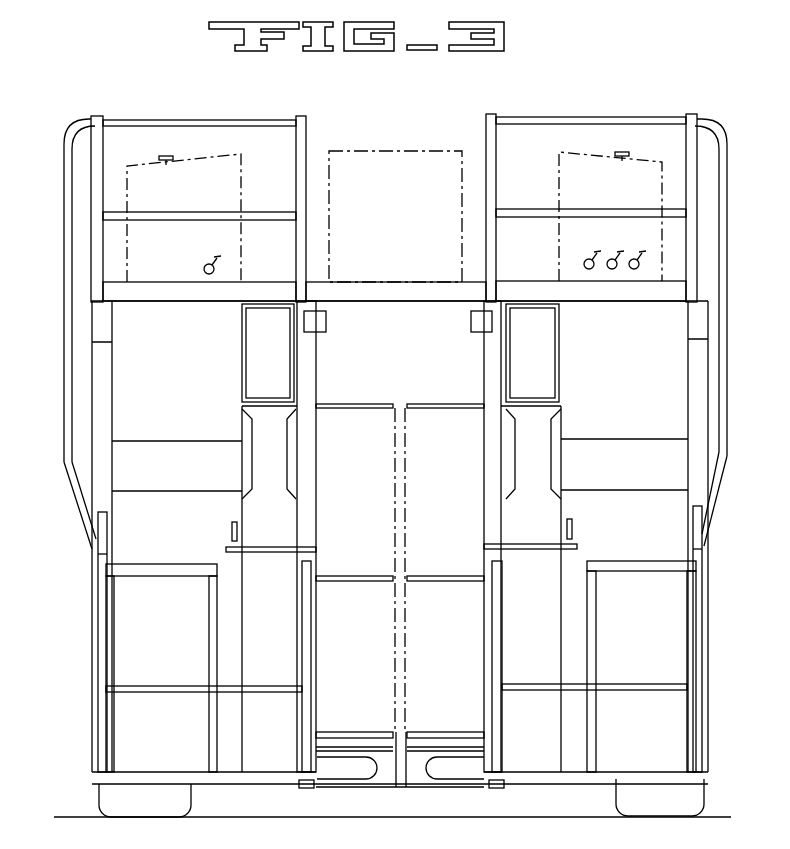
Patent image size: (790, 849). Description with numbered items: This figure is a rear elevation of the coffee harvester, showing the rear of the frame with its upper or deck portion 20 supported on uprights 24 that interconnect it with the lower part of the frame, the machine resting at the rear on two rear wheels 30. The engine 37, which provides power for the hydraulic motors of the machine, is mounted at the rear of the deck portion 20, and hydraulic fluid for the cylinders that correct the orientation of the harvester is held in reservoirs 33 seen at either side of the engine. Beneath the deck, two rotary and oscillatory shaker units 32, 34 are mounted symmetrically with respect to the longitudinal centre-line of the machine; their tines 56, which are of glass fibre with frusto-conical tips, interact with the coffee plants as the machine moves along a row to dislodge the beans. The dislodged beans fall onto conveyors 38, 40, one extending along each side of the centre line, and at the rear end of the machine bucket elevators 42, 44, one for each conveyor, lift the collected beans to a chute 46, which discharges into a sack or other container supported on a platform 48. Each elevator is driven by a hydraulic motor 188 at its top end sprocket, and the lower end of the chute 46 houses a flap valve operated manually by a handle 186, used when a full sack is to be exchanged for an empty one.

The upper or deck portion 20 is at (692, 320).
The uprights 24 is at (105, 370).
The rear wheels 30 is at (98, 802).
The rotary and oscillatory shaker unit 32 is at (460, 400).
The reservoirs 33 is at (202, 160).
The rotary and oscillatory shaker unit 34 is at (351, 401).
The engine 37 is at (342, 152).
The conveyor 38 is at (425, 782).
The conveyor 40 is at (380, 782).
The bucket elevator 42 is at (562, 622).
The bucket elevator 44 is at (248, 620).
The chute 46 is at (257, 424).
The platform 48 is at (163, 687).
The tine 56 is at (425, 408).
The handle 186 is at (233, 532).
The hydraulic motor 188 is at (472, 320).